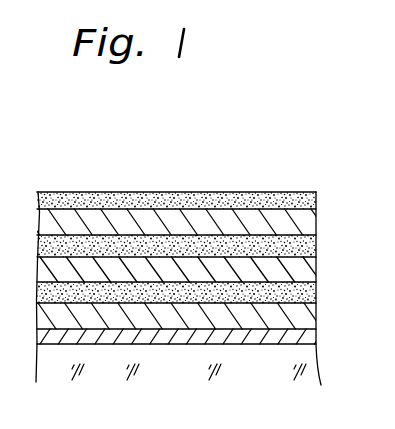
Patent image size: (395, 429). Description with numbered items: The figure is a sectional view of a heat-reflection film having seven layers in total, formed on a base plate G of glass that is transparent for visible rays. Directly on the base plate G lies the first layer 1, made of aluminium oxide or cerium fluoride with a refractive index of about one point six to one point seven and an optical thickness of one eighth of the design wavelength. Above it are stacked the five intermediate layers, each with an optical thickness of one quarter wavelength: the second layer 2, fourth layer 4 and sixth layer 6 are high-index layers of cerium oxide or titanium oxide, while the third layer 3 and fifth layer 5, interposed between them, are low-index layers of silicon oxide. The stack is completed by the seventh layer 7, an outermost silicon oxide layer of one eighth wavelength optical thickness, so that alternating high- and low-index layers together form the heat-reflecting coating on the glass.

The base plate G is at (317, 368).
The first layer 1 is at (316, 334).
The second layer 2 is at (316, 313).
The third layer 3 is at (317, 292).
The fourth layer 4 is at (317, 268).
The fifth layer 5 is at (317, 243).
The sixth layer 6 is at (317, 217).
The seventh layer 7 is at (317, 200).